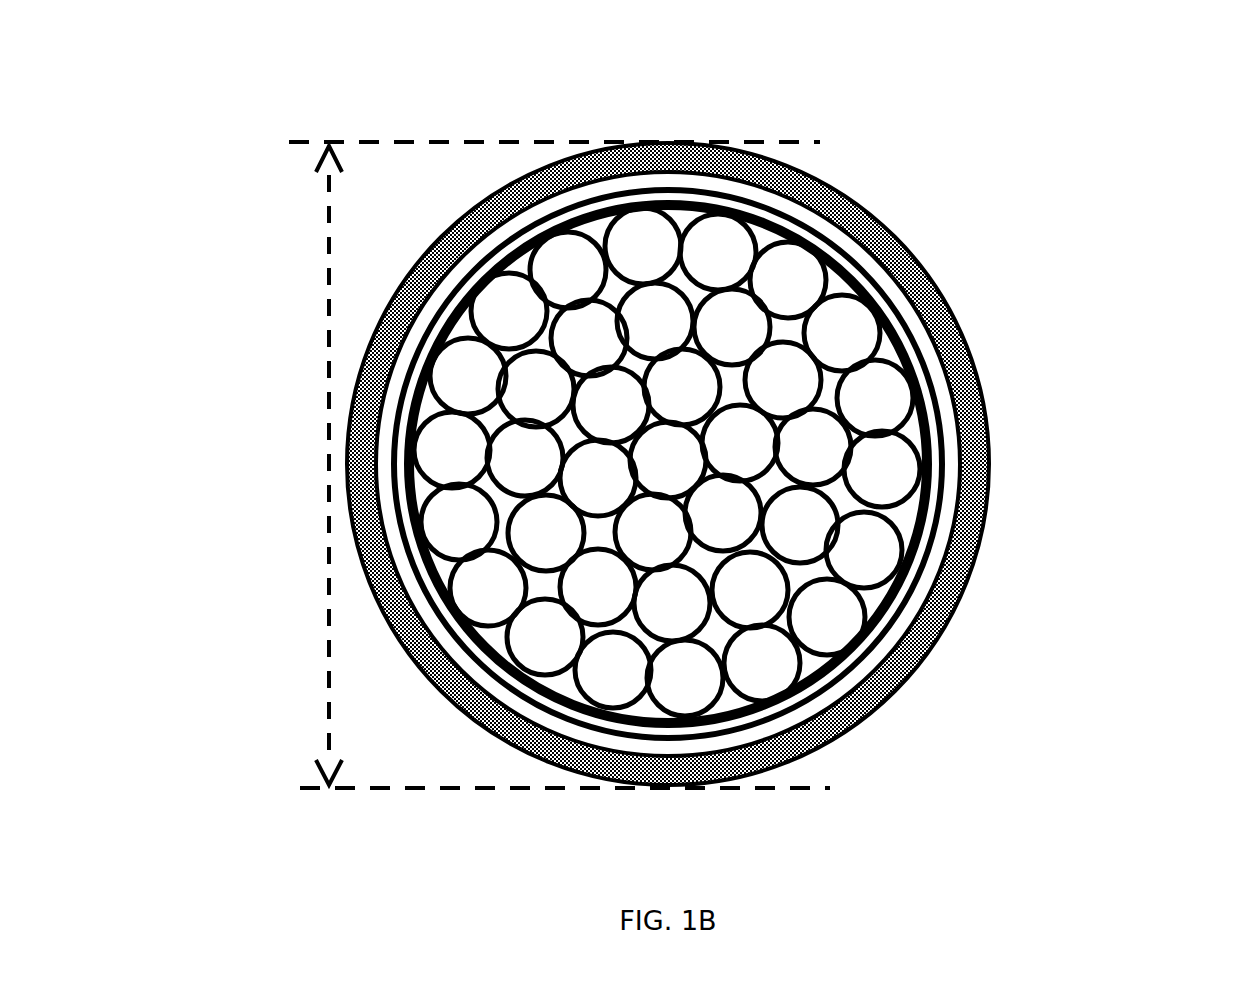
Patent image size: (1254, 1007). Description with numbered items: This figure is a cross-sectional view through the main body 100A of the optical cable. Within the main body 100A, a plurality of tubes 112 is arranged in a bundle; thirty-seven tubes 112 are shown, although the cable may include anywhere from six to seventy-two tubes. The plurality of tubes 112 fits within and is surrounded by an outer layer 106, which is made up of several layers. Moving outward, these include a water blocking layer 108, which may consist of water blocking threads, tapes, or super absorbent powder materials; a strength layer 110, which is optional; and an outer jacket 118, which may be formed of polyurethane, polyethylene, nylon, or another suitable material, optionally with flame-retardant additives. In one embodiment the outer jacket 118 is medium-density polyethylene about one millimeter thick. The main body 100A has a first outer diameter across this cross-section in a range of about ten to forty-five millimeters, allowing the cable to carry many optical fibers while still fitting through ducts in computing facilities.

The main body 100A is at (225, 198).
The outer layer 106 is at (1115, 397).
The water blocking layer 108 is at (926, 437).
The strength layer 110 is at (955, 500).
The outer jacket 118 is at (973, 562).
The tubes 112 is at (806, 394).